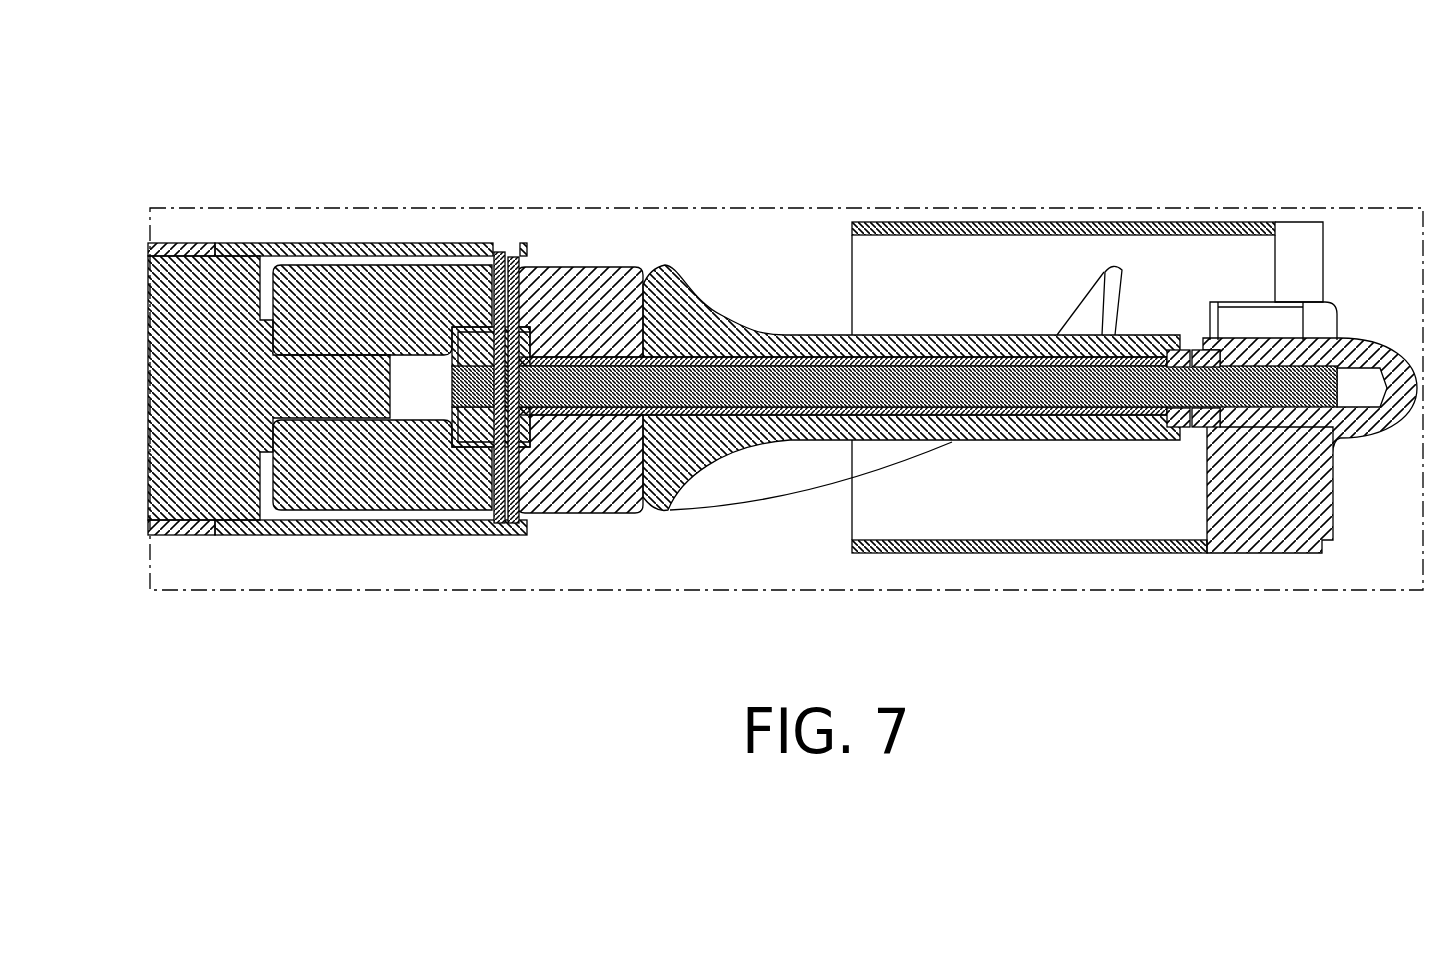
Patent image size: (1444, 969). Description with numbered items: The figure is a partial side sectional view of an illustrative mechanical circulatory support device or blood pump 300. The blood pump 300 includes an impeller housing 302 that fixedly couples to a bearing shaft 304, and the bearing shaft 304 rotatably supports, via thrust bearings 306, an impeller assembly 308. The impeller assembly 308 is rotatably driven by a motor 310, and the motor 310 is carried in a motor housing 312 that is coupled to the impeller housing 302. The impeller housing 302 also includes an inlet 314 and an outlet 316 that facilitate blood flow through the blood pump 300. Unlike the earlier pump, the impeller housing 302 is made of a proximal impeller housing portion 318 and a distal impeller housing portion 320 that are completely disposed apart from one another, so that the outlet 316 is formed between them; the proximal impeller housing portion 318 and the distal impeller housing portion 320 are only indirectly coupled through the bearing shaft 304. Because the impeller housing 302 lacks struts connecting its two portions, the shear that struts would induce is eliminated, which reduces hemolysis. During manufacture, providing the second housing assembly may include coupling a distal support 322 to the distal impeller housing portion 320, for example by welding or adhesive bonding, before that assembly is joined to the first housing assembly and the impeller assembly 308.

The blood pump 300 is at (373, 142).
The impeller housing 302 is at (912, 222).
The bearing shaft 304 is at (962, 357).
The thrust bearings 306 is at (517, 257).
The impeller assembly 308 is at (1013, 335).
The motor 310 is at (162, 252).
The motor housing 312 is at (213, 245).
The inlet 314 is at (1325, 257).
The outlet 316 is at (729, 200).
The proximal impeller housing portion 318 is at (434, 243).
The distal impeller housing portion 320 is at (1098, 222).
The distal support 322 is at (1260, 555).